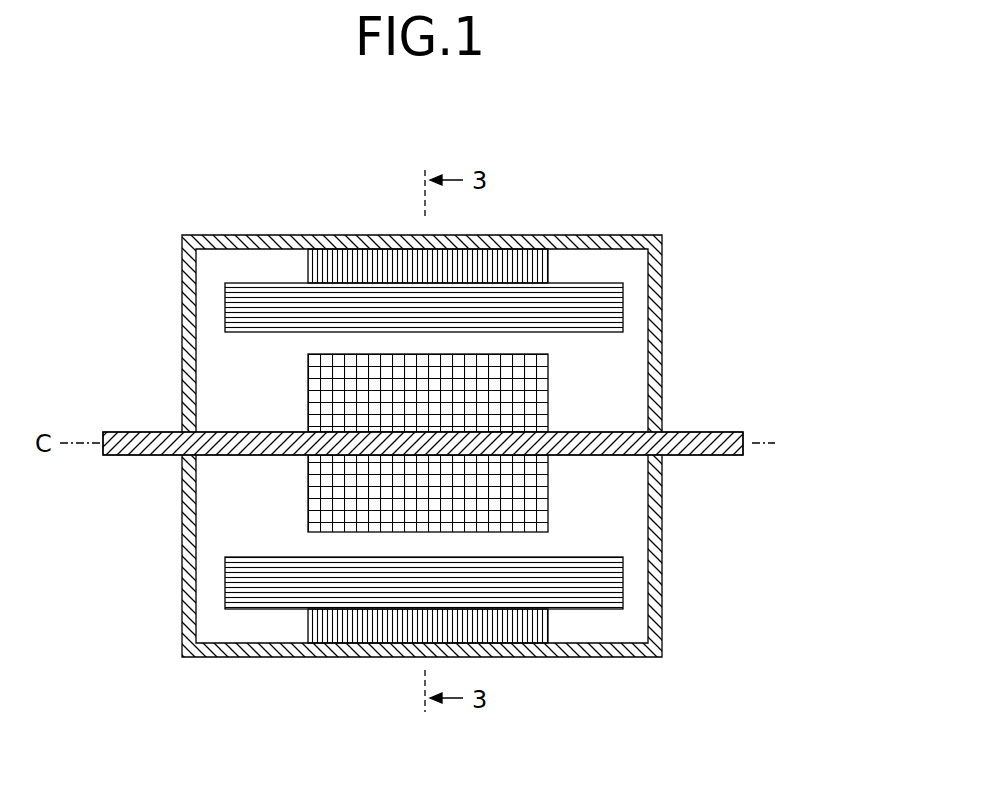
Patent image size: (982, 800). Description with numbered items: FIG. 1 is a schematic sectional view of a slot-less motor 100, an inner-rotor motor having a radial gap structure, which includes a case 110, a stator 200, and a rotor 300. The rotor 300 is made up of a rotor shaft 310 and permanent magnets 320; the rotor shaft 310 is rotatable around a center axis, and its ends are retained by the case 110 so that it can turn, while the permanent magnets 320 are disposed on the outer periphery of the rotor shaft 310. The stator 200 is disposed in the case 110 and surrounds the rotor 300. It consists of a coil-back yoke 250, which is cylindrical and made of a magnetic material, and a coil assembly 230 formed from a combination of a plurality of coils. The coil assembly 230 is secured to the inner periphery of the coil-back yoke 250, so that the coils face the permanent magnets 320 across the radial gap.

The slot-less motor 100 is at (665, 138).
The case 110 is at (181, 297).
The stator 200 is at (528, 446).
The coil assembly 230 is at (623, 305).
The coil-back yoke 250 is at (548, 264).
The rotor 300 is at (467, 449).
The rotor shaft 310 is at (590, 455).
The permanent magnets 320 is at (548, 498).